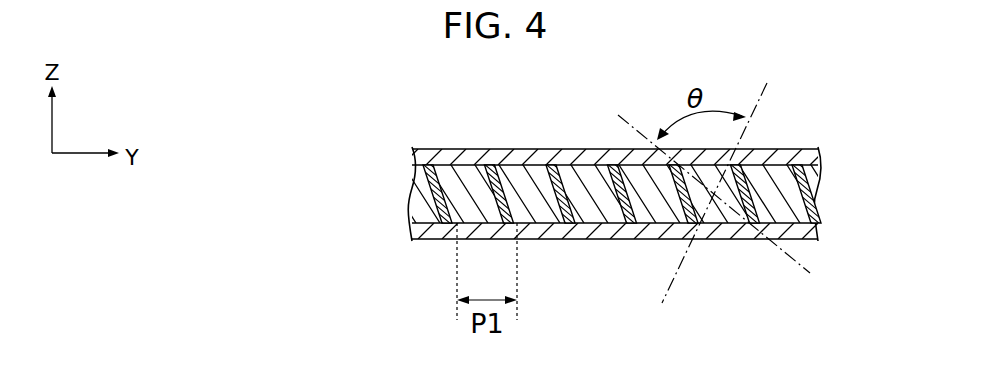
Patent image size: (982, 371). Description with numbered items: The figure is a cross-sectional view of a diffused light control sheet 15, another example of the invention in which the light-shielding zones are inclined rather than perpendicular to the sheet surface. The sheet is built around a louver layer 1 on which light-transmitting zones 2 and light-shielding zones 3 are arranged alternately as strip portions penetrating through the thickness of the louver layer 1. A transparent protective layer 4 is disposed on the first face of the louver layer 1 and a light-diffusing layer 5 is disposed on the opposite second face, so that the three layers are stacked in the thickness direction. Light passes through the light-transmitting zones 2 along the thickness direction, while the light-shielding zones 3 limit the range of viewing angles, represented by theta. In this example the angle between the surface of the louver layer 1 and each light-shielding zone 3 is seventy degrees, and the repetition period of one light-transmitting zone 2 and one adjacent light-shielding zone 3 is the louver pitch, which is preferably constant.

The louver layer 1 is at (310, 155).
The light-transmitting zones 2 is at (408, 187).
The light-shielding zones 3 is at (413, 205).
The transparent protective layer 4 is at (411, 158).
The light-diffusing layer 5 is at (410, 232).
The diffused light control sheet 15 is at (801, 121).